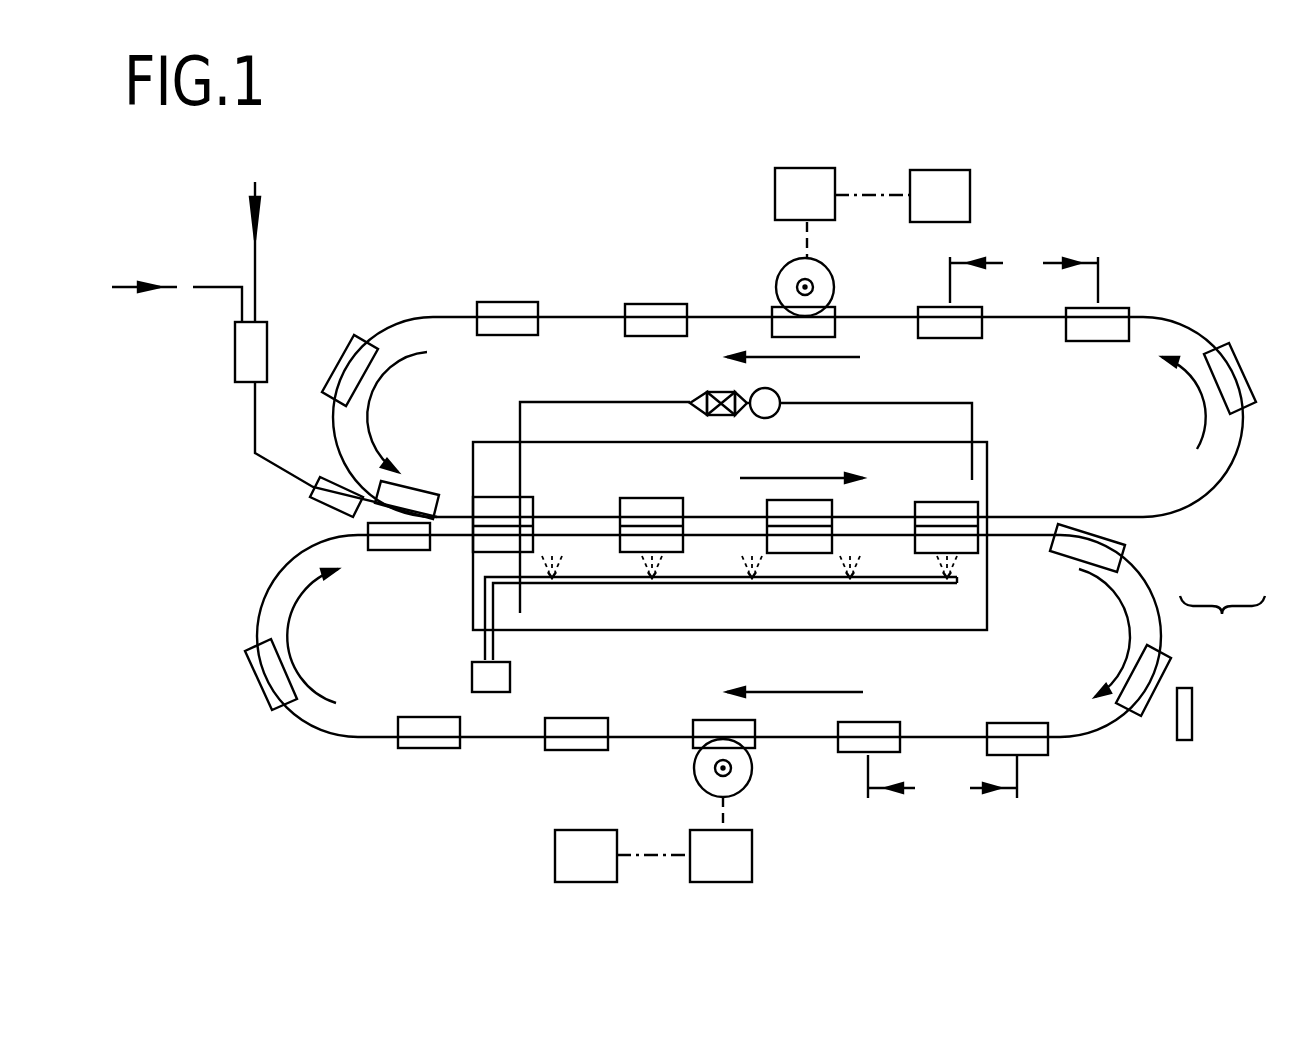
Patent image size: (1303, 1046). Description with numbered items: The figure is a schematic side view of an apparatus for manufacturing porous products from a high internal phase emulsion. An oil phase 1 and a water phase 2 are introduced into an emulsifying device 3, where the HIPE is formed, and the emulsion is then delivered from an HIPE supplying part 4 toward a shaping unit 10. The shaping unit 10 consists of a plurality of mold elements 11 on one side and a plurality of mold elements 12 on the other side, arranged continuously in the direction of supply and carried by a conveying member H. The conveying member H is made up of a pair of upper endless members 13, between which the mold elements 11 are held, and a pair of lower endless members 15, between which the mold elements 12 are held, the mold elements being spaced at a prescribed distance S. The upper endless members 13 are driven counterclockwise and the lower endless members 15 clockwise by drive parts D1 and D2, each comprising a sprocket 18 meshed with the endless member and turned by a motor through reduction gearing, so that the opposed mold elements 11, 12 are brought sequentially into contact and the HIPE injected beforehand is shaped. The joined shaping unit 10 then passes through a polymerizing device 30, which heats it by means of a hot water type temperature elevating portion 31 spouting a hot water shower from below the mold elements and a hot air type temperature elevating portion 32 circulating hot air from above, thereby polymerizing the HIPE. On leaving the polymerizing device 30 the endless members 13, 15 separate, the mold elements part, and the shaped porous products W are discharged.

The oil phase 1 is at (258, 193).
The water phase 2 is at (132, 292).
The emulsifying device 3 is at (236, 352).
The HIPE supplying part 4 is at (315, 497).
The shaping unit 10 is at (455, 618).
The mold elements 11 is at (366, 340).
The mold elements 12 is at (387, 550).
The upper endless members 13 is at (1215, 490).
The lower endless members 15 is at (1197, 557).
The sprocket 18 is at (823, 283).
The polymerizing device 30 is at (922, 632).
The hot water type temperature elevating portion 31 is at (802, 585).
The hot air type temperature elevating portion 32 is at (800, 400).
The conveying member H is at (1235, 647).
The prescribed distance S is at (983, 532).
The shaped porous products W is at (1193, 712).
The drive part D1 is at (783, 242).
The drive part D2 is at (775, 837).